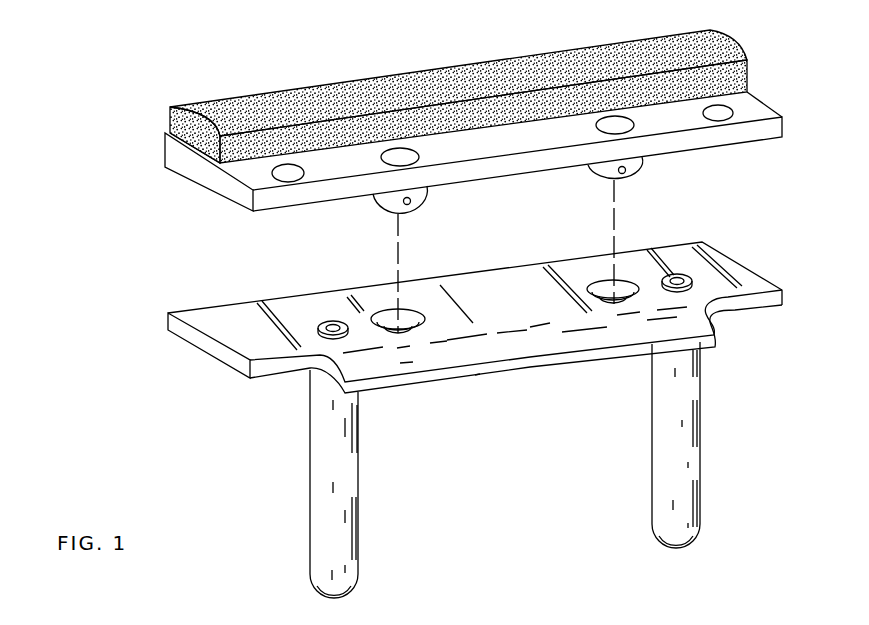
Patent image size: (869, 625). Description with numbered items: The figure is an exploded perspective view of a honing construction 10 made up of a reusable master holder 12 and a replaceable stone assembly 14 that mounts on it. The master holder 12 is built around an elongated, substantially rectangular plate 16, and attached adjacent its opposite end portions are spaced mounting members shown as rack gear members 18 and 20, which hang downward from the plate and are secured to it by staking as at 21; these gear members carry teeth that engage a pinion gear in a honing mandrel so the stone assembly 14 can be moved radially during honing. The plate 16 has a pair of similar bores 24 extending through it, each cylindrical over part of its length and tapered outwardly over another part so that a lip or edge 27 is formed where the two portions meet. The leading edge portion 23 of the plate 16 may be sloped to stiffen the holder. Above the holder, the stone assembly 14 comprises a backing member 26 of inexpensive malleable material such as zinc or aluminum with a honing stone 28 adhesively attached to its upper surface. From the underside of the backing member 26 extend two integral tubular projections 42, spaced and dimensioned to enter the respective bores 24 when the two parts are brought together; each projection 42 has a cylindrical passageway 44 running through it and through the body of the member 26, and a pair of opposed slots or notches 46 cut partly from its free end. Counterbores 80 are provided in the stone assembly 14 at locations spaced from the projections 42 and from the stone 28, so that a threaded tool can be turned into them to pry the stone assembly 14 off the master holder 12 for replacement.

The construction 10 is at (133, 82).
The master holder 12 is at (204, 352).
The stone assembly 14 is at (183, 174).
The plate 16 is at (168, 314).
The rack gear member 18 is at (360, 482).
The rack gear member 20 is at (700, 443).
The staking 21 is at (323, 338).
The leading edge portion 23 is at (483, 368).
The bores 24 is at (405, 330).
The backing member 26 is at (232, 190).
The lip or edge 27 is at (403, 318).
The honing stone 28 is at (722, 37).
The tubular projections 42 is at (636, 160).
The passageway 44 is at (607, 122).
The slots or notches 46 is at (624, 174).
The counterbores 80 is at (718, 118).